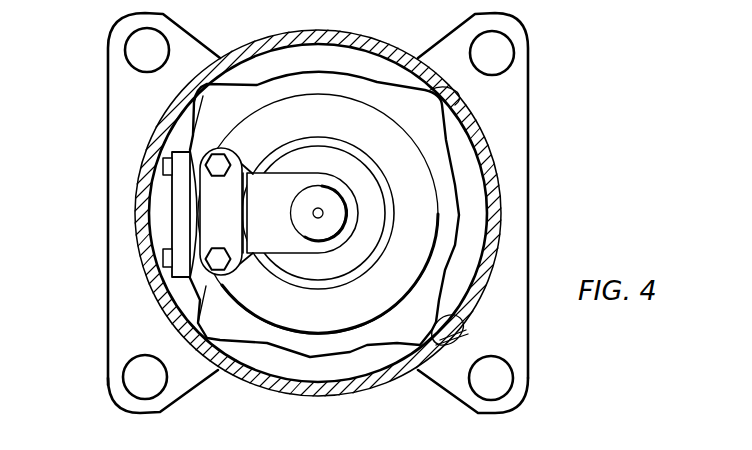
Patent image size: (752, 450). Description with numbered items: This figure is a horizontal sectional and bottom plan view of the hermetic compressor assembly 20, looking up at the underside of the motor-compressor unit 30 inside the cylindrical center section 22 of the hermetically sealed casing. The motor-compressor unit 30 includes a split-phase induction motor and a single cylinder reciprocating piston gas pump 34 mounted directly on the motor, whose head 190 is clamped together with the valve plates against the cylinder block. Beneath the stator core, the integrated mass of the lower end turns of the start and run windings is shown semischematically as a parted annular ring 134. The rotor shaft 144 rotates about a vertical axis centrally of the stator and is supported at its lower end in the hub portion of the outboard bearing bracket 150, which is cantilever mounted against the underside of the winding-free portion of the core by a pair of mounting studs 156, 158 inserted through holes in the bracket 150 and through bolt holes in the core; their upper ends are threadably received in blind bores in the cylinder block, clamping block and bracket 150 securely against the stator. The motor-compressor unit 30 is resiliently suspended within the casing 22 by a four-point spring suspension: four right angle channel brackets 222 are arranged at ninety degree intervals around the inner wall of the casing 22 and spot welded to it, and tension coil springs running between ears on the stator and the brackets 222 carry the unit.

The hermetic compressor assembly 20 is at (88, 177).
The cylindrical center section 22 is at (146, 240).
The motor-compressor unit 30 is at (464, 181).
The single cylinder reciprocating piston gas pump 34 is at (167, 188).
The parted annular ring 134 is at (301, 106).
The rotor shaft 144 is at (317, 238).
The outboard bearing bracket 150 is at (287, 168).
The mounting stud 156 is at (219, 150).
The mounting stud 158 is at (218, 247).
The head 190 is at (166, 204).
The right angle channel bracket 222 is at (448, 99).